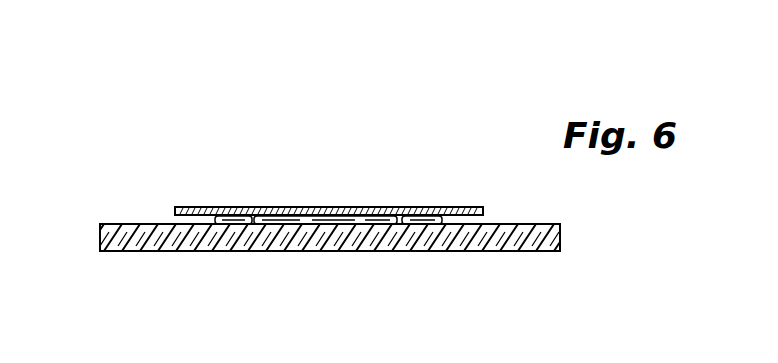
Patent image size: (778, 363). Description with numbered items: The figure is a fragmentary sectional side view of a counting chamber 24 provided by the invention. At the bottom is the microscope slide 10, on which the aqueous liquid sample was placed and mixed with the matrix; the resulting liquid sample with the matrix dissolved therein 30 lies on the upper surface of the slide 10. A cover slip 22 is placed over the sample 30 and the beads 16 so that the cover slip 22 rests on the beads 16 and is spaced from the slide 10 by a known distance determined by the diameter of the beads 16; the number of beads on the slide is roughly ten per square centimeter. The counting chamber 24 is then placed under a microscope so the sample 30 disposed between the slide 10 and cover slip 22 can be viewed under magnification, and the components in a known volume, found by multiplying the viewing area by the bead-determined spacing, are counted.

The microscope slide 10 is at (157, 252).
The beads 16 is at (340, 207).
The cover slip 22 is at (204, 207).
The counting chamber 24 is at (88, 222).
The liquid sample with the matrix dissolved therein 30 is at (427, 224).